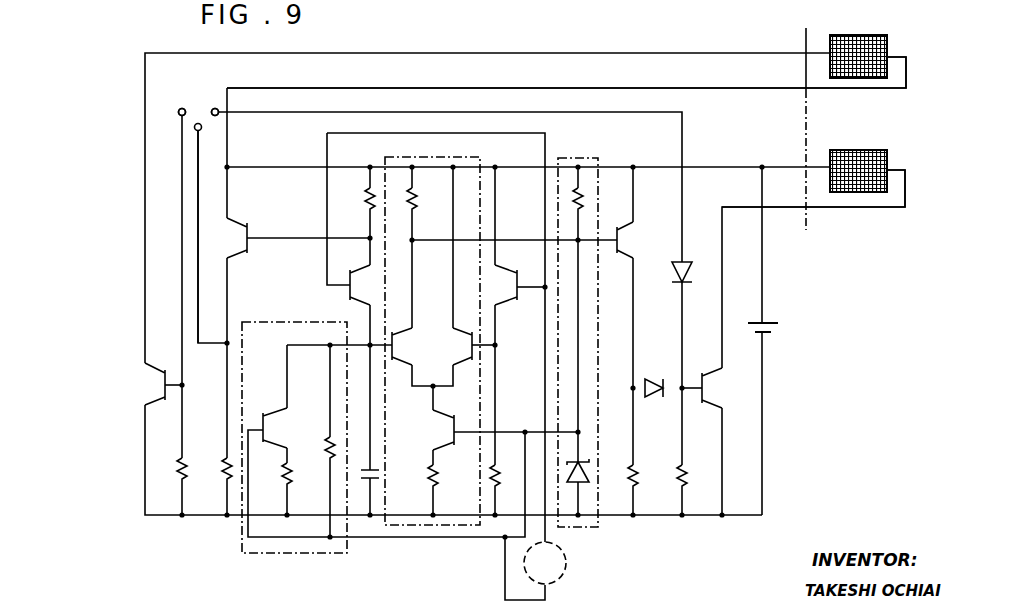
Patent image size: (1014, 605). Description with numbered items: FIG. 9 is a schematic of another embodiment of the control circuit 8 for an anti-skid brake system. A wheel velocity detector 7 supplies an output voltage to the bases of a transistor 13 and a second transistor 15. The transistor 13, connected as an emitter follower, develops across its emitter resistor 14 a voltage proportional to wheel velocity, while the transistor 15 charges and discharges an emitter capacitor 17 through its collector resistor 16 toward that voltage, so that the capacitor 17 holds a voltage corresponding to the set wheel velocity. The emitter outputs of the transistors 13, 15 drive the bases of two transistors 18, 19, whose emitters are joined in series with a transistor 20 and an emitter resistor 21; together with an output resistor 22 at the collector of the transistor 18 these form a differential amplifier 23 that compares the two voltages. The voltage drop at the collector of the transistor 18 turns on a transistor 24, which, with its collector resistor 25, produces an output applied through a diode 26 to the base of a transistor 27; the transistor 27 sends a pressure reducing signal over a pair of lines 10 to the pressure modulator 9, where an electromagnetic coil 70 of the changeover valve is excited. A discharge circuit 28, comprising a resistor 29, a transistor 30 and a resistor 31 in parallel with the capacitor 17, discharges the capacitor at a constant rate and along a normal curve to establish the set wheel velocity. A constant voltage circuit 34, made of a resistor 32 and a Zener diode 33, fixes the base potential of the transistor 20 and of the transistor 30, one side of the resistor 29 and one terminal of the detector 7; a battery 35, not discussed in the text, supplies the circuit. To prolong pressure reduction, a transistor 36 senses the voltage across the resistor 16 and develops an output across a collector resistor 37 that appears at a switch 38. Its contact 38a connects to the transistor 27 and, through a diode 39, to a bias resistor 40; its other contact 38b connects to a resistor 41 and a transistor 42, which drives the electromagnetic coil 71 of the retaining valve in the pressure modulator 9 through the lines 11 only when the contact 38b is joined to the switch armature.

The wheel velocity detector 7 is at (566, 565).
The control circuit 8 is at (510, 47).
The pressure modulator 9 is at (927, 131).
The lines 10 is at (802, 196).
The lines 11 is at (728, 86).
The transistor 13 is at (521, 300).
The emitter resistor 14 is at (517, 462).
The second transistor 15 is at (348, 290).
The collector resistor 16 is at (366, 208).
The emitter capacitor 17 is at (380, 472).
The transistor 18 is at (396, 358).
The transistor 19 is at (456, 327).
The transistor 20 is at (438, 414).
The emitter resistor 21 is at (440, 484).
The output resistor 22 is at (414, 210).
The differential amplifier 23 is at (472, 159).
The transistor 24 is at (622, 252).
The collector resistor 25 is at (636, 470).
The diode 26 is at (652, 378).
The transistor 27 is at (706, 379).
The discharge circuit 28 is at (313, 554).
The resistor 29 is at (325, 448).
The transistor 30 is at (285, 409).
The resistor 31 is at (290, 482).
The resistor 32 is at (586, 198).
The zener diode 33 is at (590, 468).
The constant voltage circuit 34 is at (575, 158).
The battery 35 is at (770, 322).
The transistor 36 is at (248, 224).
The collector resistor 37 is at (222, 470).
The switch 38 is at (201, 129).
The contact 38a is at (216, 106).
The contact 38b is at (188, 103).
The diode 39 is at (671, 275).
The bias resistor 40 is at (685, 473).
The resistor 41 is at (175, 478).
The transistor 42 is at (160, 375).
The electromagnetic coil 70 is at (849, 150).
The electromagnetic coil 71 is at (857, 36).